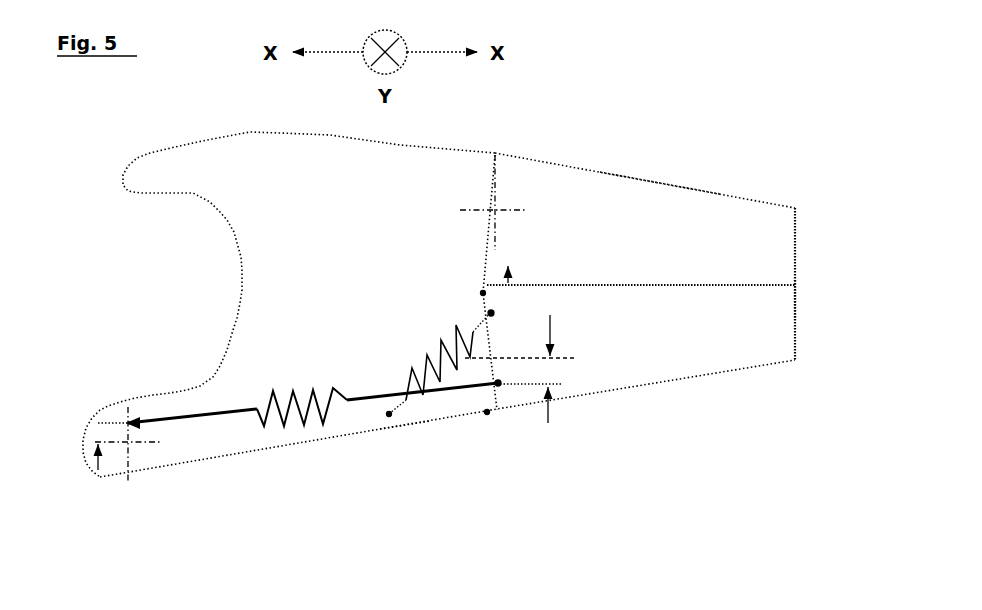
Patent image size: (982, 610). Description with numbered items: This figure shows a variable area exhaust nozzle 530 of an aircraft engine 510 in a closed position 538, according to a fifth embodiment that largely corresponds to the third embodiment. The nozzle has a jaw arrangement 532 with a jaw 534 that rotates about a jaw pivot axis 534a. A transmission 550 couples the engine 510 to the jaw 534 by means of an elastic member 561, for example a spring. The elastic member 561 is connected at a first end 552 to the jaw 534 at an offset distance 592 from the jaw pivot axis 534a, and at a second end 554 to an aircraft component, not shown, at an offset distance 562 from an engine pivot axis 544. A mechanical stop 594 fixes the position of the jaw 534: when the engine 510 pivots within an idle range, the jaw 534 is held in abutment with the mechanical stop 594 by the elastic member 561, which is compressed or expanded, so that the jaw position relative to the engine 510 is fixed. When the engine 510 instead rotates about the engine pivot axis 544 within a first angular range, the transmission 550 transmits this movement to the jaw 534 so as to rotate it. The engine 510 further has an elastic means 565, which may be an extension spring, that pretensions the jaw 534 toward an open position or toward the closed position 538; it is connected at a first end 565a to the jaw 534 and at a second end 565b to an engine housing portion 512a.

The engine 510 is at (191, 293).
The variable area exhaust nozzle 530 is at (723, 186).
The jaw arrangement 532 is at (667, 184).
The jaw 534 is at (765, 231).
The jaw pivot axis 534a is at (505, 348).
The closed position 538 is at (832, 300).
The engine pivot axis 544 is at (125, 445).
The transmission 550 is at (231, 450).
The first end 552 is at (511, 390).
The second end 554 is at (138, 416).
The elastic member 561 is at (299, 430).
The offset distance 562 is at (98, 424).
The elastic means 565 is at (416, 350).
The first end 565a is at (488, 310).
The second end 565b is at (387, 425).
The offset distance 592 is at (530, 369).
The mechanical stop 594 is at (479, 286).
The engine housing portion 512a is at (407, 427).